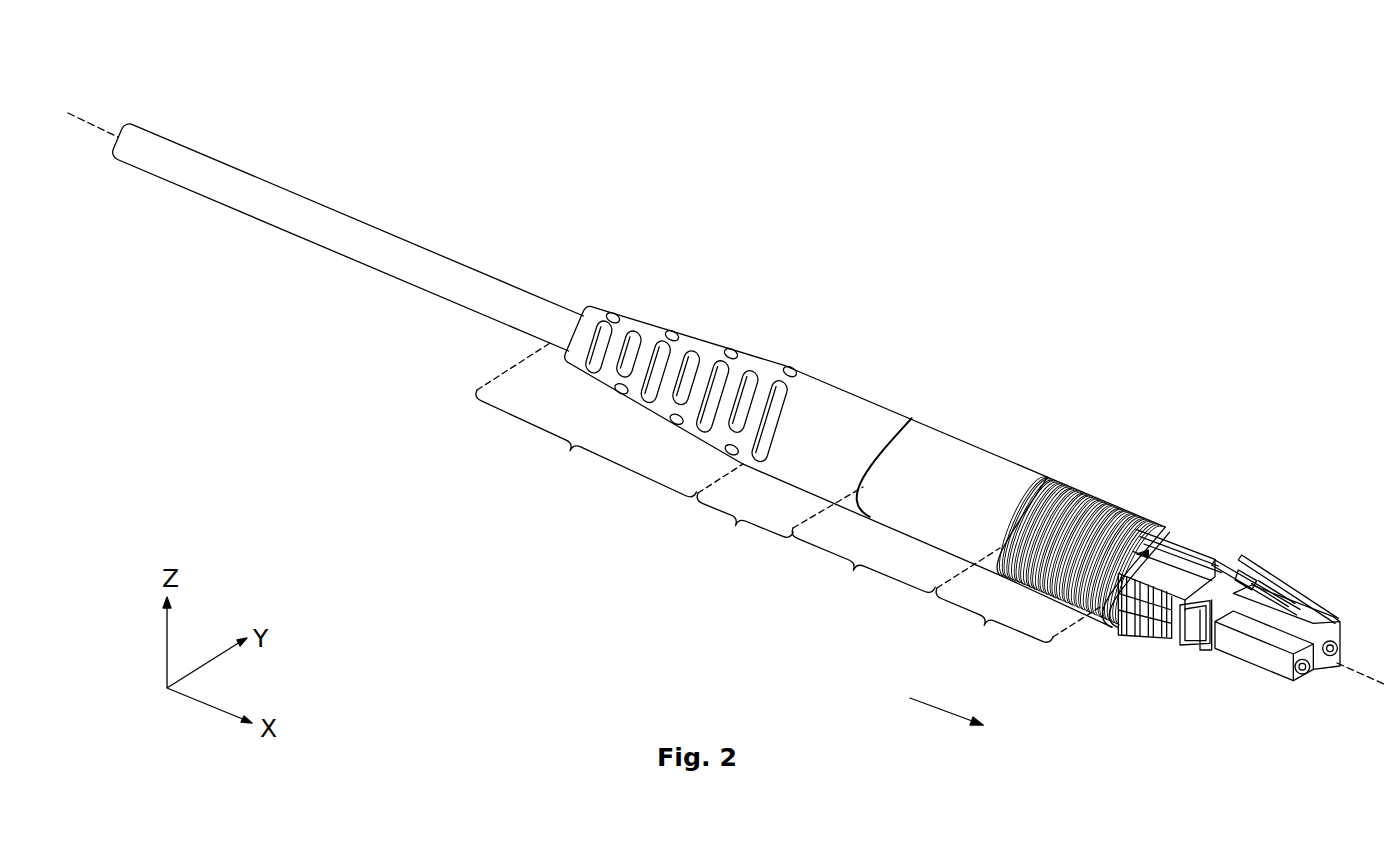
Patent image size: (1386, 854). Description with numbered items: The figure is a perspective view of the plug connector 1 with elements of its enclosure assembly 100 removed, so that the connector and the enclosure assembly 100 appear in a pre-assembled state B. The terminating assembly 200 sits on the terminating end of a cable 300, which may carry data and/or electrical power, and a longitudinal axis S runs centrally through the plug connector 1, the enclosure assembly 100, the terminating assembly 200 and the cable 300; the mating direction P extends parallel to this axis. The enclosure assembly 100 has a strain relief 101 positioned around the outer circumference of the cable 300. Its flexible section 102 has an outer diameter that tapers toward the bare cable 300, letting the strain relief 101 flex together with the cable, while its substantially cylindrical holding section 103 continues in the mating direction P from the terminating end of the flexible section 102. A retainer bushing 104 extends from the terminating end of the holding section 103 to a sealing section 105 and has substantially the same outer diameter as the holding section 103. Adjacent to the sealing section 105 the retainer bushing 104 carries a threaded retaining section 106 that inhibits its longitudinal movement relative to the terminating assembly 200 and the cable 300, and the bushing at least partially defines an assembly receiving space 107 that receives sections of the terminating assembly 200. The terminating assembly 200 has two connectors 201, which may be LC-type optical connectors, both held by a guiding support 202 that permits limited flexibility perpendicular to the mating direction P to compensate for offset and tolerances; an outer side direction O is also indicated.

The plug connector 1 is at (1093, 242).
The enclosure assembly 100 is at (885, 399).
The strain relief 101 is at (787, 365).
The flexible section 102 is at (583, 424).
The holding section 103 is at (742, 511).
The retainer bushing 104 is at (1017, 460).
The sealing section 105 is at (861, 548).
The threaded retaining section 106 is at (1015, 609).
The assembly receiving space 107 is at (1169, 595).
The terminating assembly 200 is at (1229, 609).
The connectors 201 is at (1315, 610).
The guiding support 202 is at (1145, 632).
The cable 300 is at (468, 262).
The longitudinal axis S is at (82, 113).
The outer side direction O is at (1118, 282).
The pre-assembled state B is at (675, 597).
The mating direction P is at (933, 710).